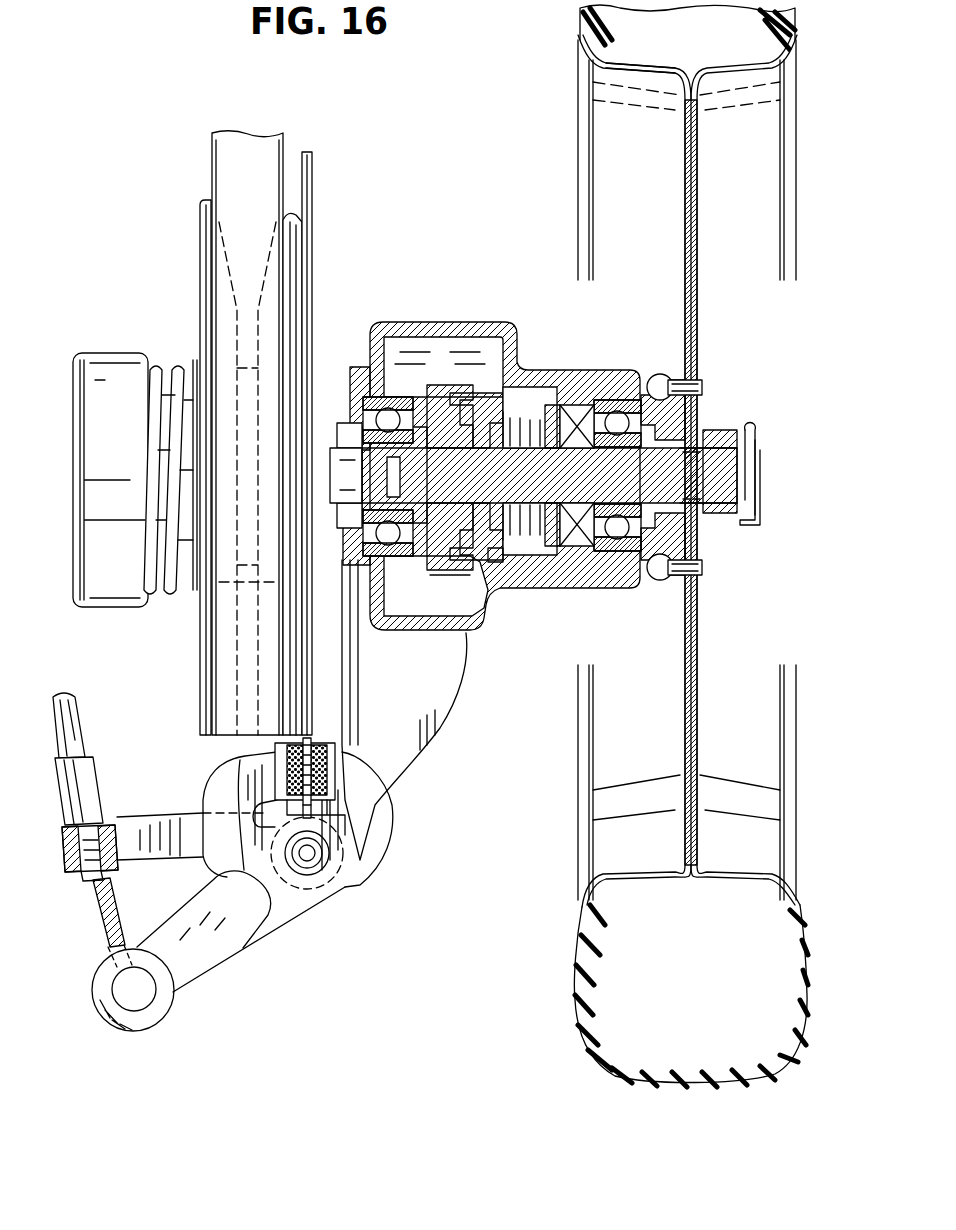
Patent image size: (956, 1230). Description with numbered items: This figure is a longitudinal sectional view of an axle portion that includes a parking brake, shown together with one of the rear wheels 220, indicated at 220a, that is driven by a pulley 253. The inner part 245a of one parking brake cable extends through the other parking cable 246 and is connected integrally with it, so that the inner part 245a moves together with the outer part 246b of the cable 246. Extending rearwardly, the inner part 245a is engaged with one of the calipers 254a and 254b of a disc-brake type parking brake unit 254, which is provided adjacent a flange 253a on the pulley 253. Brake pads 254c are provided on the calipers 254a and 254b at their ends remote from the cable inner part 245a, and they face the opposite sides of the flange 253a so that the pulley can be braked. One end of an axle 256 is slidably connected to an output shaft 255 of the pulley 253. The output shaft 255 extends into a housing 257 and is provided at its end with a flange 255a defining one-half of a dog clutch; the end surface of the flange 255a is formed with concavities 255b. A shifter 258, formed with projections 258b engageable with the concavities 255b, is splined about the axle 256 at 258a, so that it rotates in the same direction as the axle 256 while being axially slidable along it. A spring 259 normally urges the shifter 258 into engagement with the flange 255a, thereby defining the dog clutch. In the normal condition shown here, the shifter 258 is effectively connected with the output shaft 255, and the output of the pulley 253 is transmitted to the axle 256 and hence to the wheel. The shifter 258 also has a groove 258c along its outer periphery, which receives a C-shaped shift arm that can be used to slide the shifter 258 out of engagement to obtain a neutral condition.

The rear wheel 220 is at (583, 14).
The rear wheel 220a is at (740, 62).
The parking brake cable 246 is at (77, 712).
The outer part 246b is at (86, 745).
The inner part 245a is at (118, 924).
The pulley 253 is at (200, 240).
The flange 253a is at (312, 188).
The parking brake unit 254 is at (243, 957).
The caliper 254a is at (180, 957).
The caliper 254b is at (158, 830).
The brake pads 254c is at (300, 760).
The output shaft 255 is at (347, 455).
The flange 255a is at (437, 398).
The concavities 255b is at (466, 398).
The axle 256 is at (657, 505).
The housing 257 is at (458, 628).
The shifter 258 is at (503, 388).
The spline 258a is at (545, 425).
The projections 258b is at (436, 570).
The groove 258c is at (500, 545).
The spring 259 is at (527, 520).